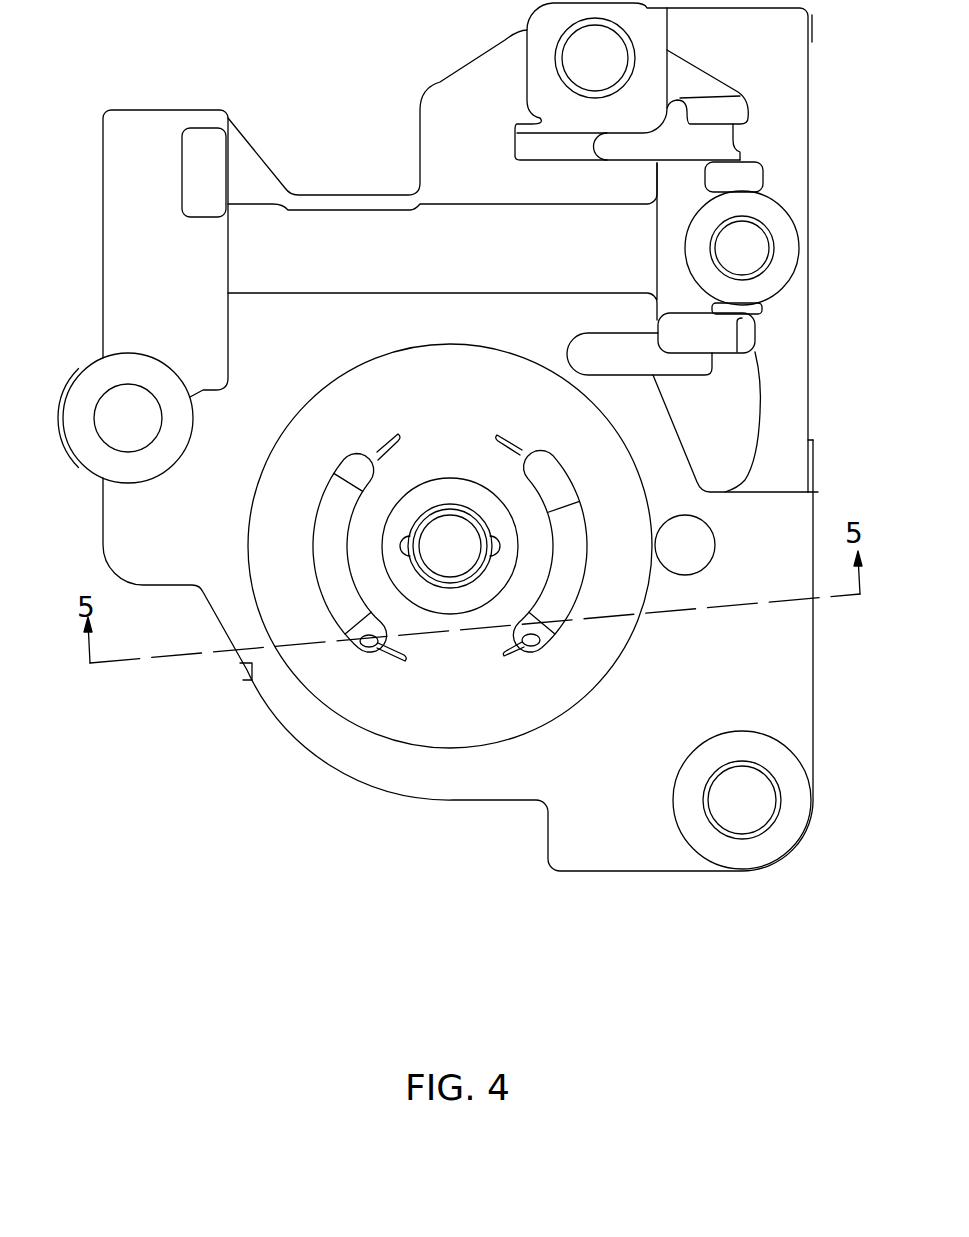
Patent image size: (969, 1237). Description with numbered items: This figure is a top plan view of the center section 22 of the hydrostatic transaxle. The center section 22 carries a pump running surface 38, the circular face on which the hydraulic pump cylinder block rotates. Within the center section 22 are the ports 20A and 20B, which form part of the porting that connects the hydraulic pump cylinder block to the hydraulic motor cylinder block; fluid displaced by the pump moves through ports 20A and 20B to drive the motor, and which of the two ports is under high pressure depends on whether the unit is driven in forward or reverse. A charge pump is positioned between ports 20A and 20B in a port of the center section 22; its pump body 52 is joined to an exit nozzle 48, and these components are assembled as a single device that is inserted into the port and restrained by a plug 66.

The center section 22 is at (297, 358).
The pump running surface 38 is at (467, 444).
The port 20A is at (355, 471).
The port 20B is at (548, 471).
The pump body 52 is at (363, 625).
The exit nozzle 48 is at (535, 641).
The plug 66 is at (240, 673).